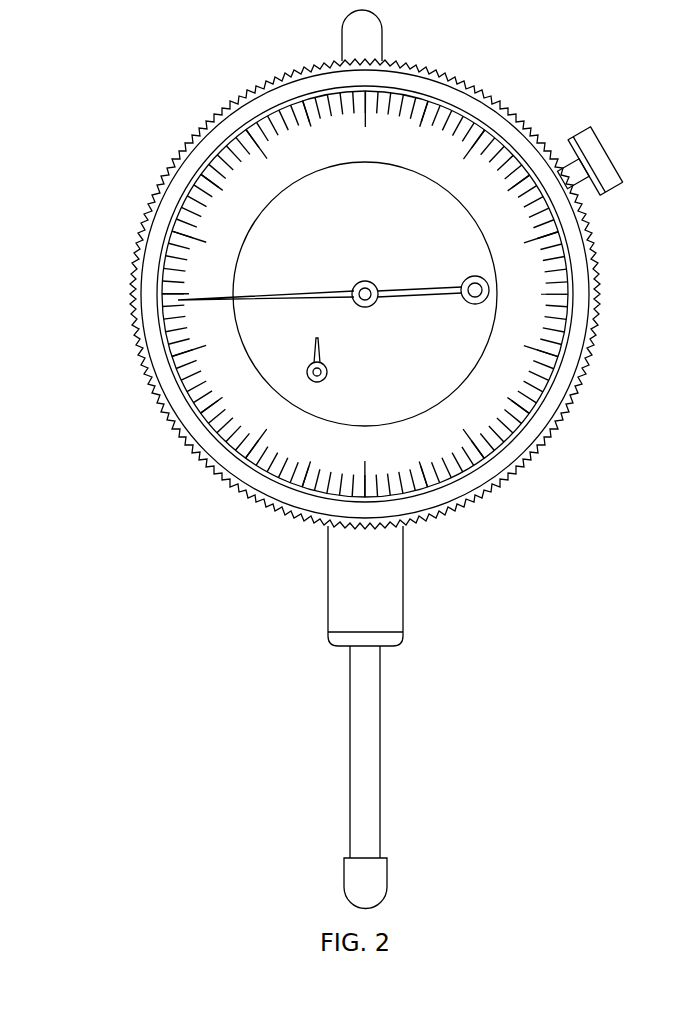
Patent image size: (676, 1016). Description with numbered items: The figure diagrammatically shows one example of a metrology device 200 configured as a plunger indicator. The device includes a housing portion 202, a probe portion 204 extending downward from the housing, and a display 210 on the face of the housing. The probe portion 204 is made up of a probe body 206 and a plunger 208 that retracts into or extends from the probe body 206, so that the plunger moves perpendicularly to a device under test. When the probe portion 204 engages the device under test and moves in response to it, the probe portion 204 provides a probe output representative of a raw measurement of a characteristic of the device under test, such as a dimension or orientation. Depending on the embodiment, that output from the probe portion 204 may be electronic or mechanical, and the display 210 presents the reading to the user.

The metrology device 200 is at (94, 93).
The housing portion 202 is at (207, 130).
The probe portion 204 is at (256, 623).
The probe body 206 is at (403, 613).
The plunger 208 is at (380, 847).
The display 210 is at (424, 163).